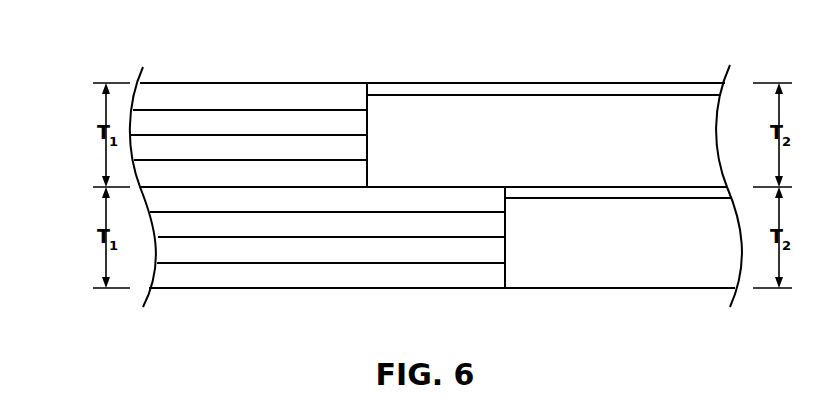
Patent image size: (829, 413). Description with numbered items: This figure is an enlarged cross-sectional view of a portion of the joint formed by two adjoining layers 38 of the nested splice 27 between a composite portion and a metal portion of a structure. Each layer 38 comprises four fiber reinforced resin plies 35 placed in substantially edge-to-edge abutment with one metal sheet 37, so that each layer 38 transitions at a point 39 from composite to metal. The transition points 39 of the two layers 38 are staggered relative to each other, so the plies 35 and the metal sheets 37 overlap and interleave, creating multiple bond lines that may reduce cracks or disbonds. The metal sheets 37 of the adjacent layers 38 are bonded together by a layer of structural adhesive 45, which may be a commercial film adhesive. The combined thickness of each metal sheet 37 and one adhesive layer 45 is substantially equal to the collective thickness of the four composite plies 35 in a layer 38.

The nested splice 27 is at (401, 233).
The fiber reinforced resin plies 35 is at (255, 173).
The metal sheets 37 is at (658, 163).
The layers 38 is at (80, 83).
The transition point 39 is at (366, 74).
The layer of structural adhesive 45 is at (570, 193).